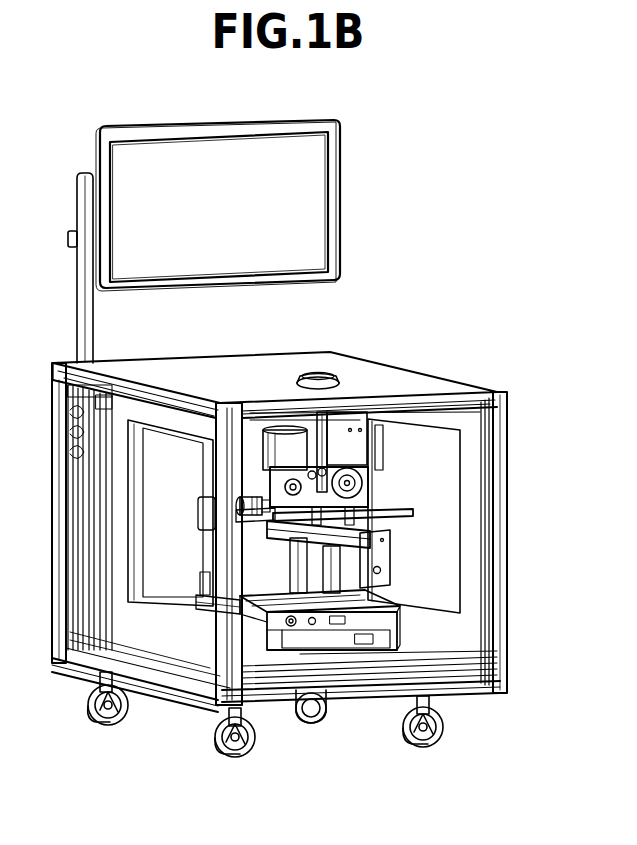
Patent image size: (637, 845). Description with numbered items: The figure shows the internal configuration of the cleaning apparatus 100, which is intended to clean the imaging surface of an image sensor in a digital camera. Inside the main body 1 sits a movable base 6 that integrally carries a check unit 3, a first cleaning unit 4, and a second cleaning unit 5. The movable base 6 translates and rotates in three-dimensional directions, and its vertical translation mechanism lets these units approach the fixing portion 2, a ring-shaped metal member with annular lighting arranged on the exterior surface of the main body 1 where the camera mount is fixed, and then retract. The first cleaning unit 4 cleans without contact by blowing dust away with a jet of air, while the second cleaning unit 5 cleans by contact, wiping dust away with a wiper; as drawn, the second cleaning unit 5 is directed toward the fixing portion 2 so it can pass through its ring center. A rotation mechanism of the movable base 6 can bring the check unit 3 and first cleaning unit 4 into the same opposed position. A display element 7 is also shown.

The cleaning apparatus 100 is at (385, 132).
The main body 1 is at (413, 373).
The fixing portion 2 is at (318, 374).
The check unit 3 is at (248, 485).
The first cleaning unit 4 is at (405, 518).
The second cleaning unit 5 is at (357, 440).
The movable base 6 is at (293, 546).
The display monitor 7 is at (138, 255).